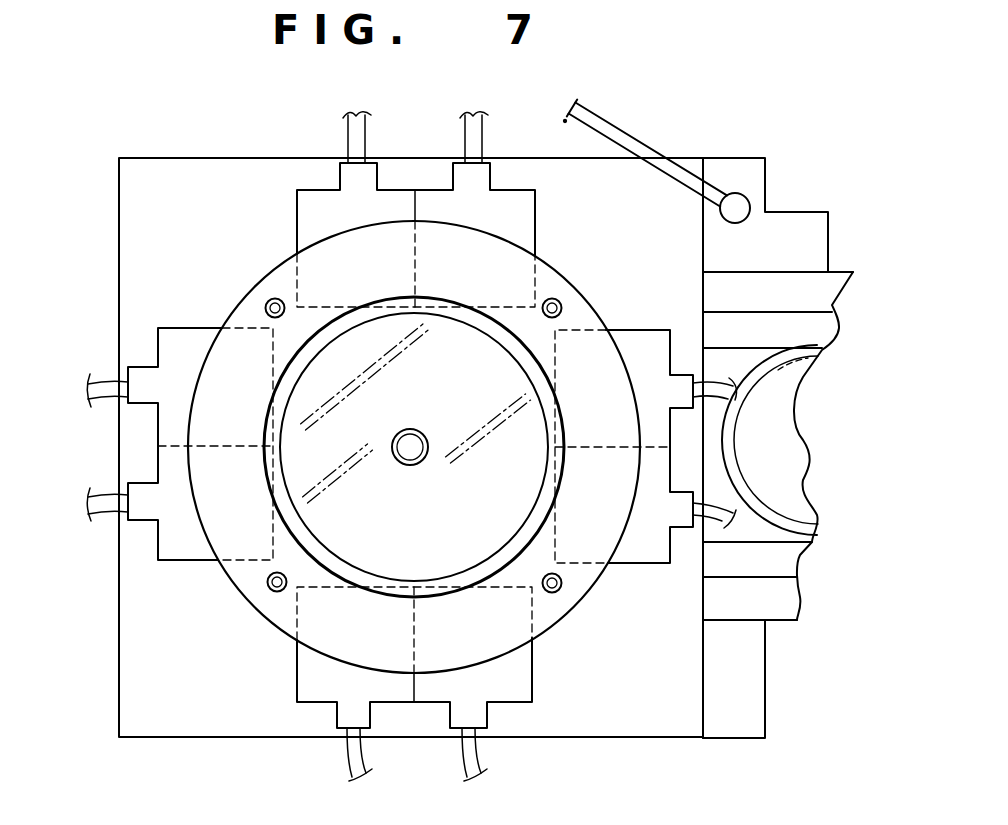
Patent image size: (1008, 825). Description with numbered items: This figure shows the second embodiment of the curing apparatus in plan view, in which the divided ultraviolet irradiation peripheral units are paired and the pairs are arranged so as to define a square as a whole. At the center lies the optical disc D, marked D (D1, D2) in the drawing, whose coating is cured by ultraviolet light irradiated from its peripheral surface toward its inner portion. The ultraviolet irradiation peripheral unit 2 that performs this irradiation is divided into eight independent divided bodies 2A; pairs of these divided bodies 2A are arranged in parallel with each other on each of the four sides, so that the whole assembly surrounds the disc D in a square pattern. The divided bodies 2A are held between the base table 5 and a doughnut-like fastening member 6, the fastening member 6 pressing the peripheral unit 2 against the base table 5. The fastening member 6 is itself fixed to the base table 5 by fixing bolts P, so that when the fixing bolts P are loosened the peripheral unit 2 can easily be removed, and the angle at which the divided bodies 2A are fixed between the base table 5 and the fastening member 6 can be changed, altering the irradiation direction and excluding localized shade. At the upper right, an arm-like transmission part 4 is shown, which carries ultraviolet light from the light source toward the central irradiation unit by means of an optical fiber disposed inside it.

The ultraviolet irradiation peripheral unit 2 is at (157, 336).
The divided bodies 2A is at (172, 410).
The arm-like transmission part 4 is at (638, 128).
The base table 5 is at (625, 691).
The doughnut-like fastening member 6 is at (245, 579).
The fixing bolts P is at (560, 300).
The optical disc D is at (414, 447).
The first disc D1 is at (414, 447).
The second disc D2 is at (481, 537).